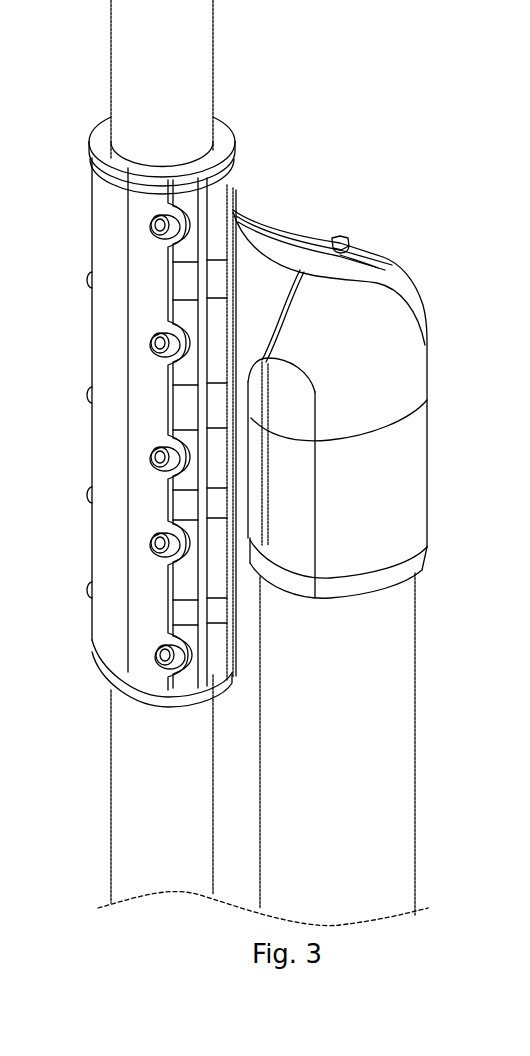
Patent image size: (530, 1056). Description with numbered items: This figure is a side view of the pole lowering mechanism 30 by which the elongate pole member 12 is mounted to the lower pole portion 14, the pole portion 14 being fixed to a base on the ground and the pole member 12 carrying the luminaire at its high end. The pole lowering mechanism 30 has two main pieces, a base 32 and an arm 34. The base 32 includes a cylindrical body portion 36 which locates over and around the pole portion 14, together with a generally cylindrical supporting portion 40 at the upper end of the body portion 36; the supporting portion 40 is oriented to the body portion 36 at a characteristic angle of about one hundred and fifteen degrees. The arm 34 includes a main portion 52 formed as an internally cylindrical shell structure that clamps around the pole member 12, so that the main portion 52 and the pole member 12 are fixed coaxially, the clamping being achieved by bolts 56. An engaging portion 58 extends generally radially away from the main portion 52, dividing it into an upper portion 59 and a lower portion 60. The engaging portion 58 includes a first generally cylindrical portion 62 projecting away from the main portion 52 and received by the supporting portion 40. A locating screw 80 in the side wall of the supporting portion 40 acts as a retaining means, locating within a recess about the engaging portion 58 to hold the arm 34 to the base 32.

The pole member 12 is at (148, 828).
The pole portion 14 is at (368, 750).
The pole lowering mechanism 30 is at (403, 290).
The base 32 is at (397, 383).
The arm 34 is at (233, 203).
The body portion 36 is at (392, 500).
The supporting portion 40 is at (367, 270).
The main portion 52 is at (108, 610).
The bolts 56 is at (155, 225).
The engaging portion 58 is at (278, 257).
The upper portion 59 is at (96, 193).
The lower portion 60 is at (118, 665).
The first generally cylindrical portion 62 is at (268, 247).
The locating screw 80 is at (343, 237).